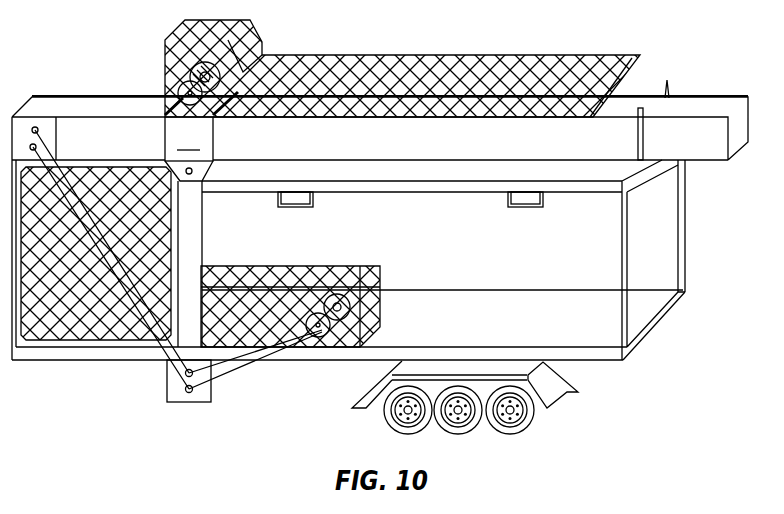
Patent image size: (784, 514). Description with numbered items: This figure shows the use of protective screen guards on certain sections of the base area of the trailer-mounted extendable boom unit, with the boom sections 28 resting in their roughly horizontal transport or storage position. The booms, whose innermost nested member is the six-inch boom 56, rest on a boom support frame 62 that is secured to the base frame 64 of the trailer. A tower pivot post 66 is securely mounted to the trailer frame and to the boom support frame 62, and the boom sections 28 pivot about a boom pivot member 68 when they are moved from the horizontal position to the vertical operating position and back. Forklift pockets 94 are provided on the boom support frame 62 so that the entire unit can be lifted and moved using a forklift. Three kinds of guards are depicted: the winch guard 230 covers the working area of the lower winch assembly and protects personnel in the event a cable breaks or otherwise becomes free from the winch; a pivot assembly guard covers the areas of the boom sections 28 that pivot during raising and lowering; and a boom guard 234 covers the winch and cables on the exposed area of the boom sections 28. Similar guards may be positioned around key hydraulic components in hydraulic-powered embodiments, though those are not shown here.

The boom section 28 is at (702, 75).
The six-inch boom 56 is at (83, 327).
The boom support frame 62 is at (560, 192).
The base frame 64 is at (583, 360).
The tower pivot post 66 is at (196, 242).
The boom pivot member 68 is at (189, 149).
The forklift pockets 94 is at (296, 210).
The winch guard 230 is at (333, 266).
The boom guard 234 is at (483, 55).